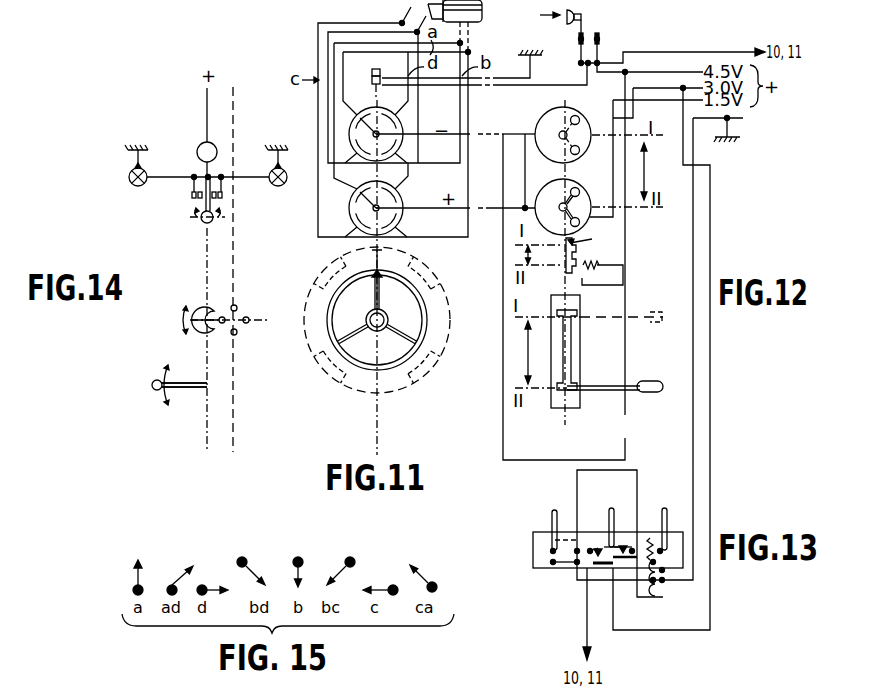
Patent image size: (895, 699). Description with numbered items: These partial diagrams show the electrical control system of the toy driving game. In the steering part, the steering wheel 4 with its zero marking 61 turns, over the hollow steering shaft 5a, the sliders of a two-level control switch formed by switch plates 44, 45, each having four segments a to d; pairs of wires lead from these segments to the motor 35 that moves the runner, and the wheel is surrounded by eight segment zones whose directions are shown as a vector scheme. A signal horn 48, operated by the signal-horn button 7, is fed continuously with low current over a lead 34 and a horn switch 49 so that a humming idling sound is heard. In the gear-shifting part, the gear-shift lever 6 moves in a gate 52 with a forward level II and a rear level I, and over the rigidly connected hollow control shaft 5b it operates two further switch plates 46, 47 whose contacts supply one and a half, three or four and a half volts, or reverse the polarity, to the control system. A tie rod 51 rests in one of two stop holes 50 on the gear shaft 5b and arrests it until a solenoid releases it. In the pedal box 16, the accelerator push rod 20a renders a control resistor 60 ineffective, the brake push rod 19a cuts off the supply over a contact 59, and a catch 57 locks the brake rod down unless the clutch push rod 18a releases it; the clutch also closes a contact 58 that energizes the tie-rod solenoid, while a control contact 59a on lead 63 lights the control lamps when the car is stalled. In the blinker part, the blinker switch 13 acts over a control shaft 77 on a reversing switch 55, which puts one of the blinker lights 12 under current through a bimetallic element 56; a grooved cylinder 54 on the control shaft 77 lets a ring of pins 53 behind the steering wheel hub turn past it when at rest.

In FIG. 14, the blinker lights 12 is at (130, 172).
In FIG. 14, the bimetallic element 56 is at (204, 143).
In FIG. 14, the reversing switch 55 is at (192, 196).
In FIG. 14, the cylinder 54 is at (205, 307).
In FIG. 14, the ring of pins 53 is at (240, 311).
In FIG. 14, the control shaft 77 is at (207, 372).
In FIG. 14, the blinker switch 13 is at (200, 392).
In FIG. 14, the steering wheel axis or hollow shaft 5a is at (235, 430).
In FIG. 11, the steering wheel axis or hollow shaft 5a is at (379, 428).
In FIG. 11, the motor 35 is at (482, 10).
In FIG. 11, the signal horn 48 is at (372, 72).
In FIG. 11, the switch plate 44 is at (400, 128).
In FIG. 11, the switch plate 45 is at (400, 202).
In FIG. 11, the steering wheel 4 is at (384, 323).
In FIG. 11, the signal-horn button 7 is at (383, 328).
In FIG. 11, the zero marking 61 is at (372, 278).
In FIG. 12, the horn switch 49 is at (598, 35).
In FIG. 12, the lead 34 is at (645, 52).
In FIG. 12, the switch plate 46 is at (545, 118).
In FIG. 12, the switch plate 47 is at (553, 182).
In FIG. 12, the stop holes 50 is at (586, 242).
In FIG. 12, the tie rod 51 is at (601, 263).
In FIG. 12, the gate 52 is at (578, 353).
In FIG. 12, the hollow control shaft 5b is at (567, 418).
In FIG. 12, the gear-shift lever 6 is at (655, 322).
In FIG. 13, the pedal box 16 is at (532, 546).
In FIG. 13, the push rod 18a is at (553, 520).
In FIG. 13, the push rod 19a is at (611, 509).
In FIG. 13, the push rod 20a is at (666, 509).
In FIG. 13, the catch 57 is at (576, 540).
In FIG. 13, the contact 58 is at (553, 564).
In FIG. 13, the contact 59 is at (625, 548).
In FIG. 13, the control contact 59a is at (597, 548).
In FIG. 13, the control resistor 60 is at (652, 596).
In FIG. 13, the lead 63 is at (585, 607).